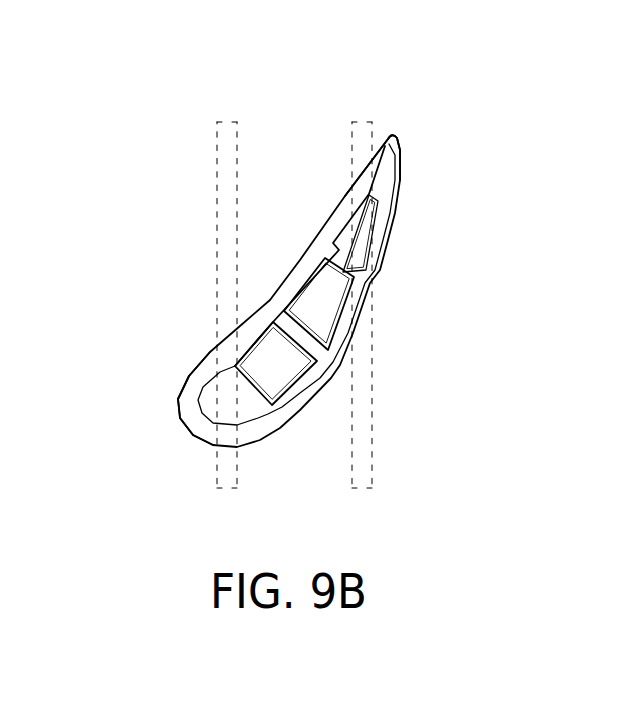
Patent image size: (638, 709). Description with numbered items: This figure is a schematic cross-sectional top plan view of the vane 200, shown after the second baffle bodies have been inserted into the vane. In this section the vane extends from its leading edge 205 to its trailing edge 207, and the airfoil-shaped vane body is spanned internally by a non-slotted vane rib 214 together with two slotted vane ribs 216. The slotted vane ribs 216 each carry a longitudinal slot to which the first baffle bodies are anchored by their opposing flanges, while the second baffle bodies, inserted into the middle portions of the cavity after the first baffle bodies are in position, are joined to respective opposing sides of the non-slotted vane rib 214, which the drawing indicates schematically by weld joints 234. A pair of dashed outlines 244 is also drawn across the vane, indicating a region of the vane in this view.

The airfoil 200 is at (431, 124).
The leading edge 205 is at (186, 426).
The trailing edge 207 is at (390, 134).
The vane rib 214 is at (337, 375).
The slotted vane rib 216 is at (356, 272).
The weld joint 234 is at (320, 324).
The radial section region 244 is at (347, 150).